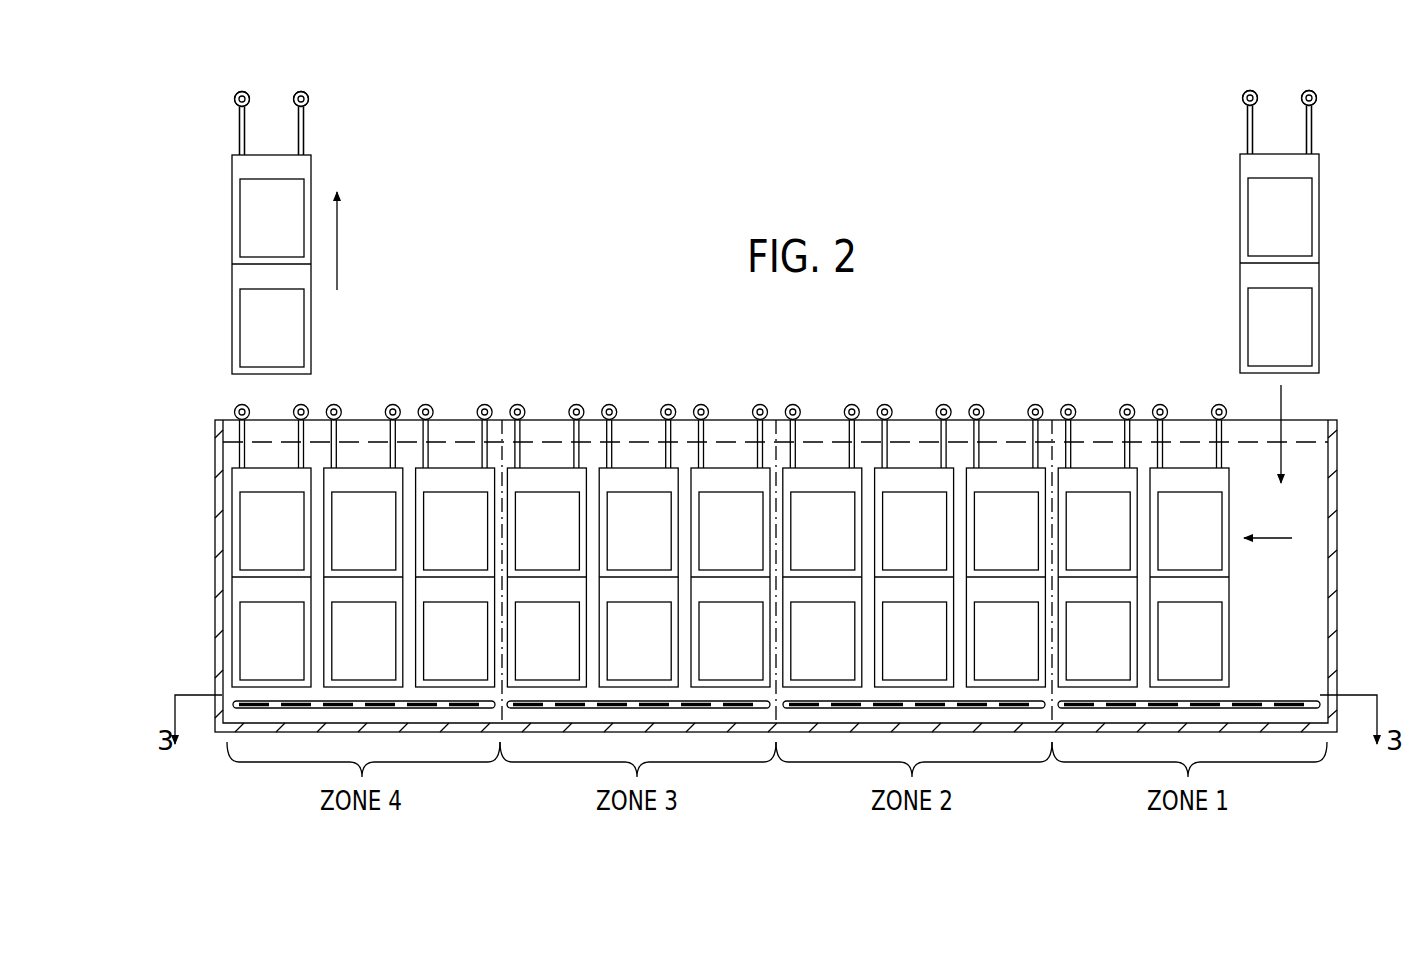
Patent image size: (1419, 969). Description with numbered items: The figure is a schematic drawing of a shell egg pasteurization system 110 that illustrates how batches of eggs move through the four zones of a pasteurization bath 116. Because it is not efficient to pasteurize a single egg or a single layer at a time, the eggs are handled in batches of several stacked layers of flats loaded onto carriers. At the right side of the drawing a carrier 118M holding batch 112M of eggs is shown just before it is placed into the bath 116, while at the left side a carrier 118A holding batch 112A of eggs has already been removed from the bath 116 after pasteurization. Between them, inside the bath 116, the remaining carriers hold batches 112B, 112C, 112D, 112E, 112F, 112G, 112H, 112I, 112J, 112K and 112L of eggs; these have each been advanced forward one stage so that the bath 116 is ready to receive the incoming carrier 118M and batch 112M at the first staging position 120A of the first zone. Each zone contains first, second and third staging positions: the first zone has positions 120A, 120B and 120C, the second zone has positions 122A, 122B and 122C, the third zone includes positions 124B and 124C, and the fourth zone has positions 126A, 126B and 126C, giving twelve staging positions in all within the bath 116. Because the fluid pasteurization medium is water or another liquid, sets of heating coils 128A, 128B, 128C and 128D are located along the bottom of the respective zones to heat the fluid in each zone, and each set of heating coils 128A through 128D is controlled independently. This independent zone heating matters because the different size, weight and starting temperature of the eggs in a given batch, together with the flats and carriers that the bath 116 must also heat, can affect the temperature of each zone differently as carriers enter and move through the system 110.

The shell egg pasteurization system 110 is at (1002, 289).
The batch of eggs 112A is at (232, 193).
The batch of eggs 112B is at (272, 483).
The batch of eggs 112C is at (364, 483).
The batch of eggs 112D is at (456, 483).
The batch of eggs 112E is at (548, 483).
The batch of eggs 112F is at (640, 483).
The batch of eggs 112G is at (732, 483).
The batch of eggs 112H is at (823, 483).
The batch of eggs 112I is at (915, 483).
The batch of eggs 112J is at (1007, 483).
The batch of eggs 112K is at (1099, 483).
The batch of eggs 112L is at (1190, 483).
The batch of eggs 112M is at (1316, 245).
The pasteurization bath 116 is at (228, 548).
The carrier 118A is at (312, 154).
The carrier 118M is at (1320, 153).
The first staging position 120A is at (1272, 690).
The second staging position 120B is at (1167, 692).
The third staging position 120C is at (1084, 692).
The first staging position 122A is at (733, 692).
The second staging position 122B is at (891, 692).
The third staging position 122C is at (809, 692).
The second staging position 124B is at (614, 692).
The third staging position 124C is at (539, 692).
The first staging position 126A is at (456, 692).
The second staging position 126B is at (339, 692).
The third staging position 126C is at (259, 692).
The set of heating coils 128A is at (1288, 702).
The set of heating coils 128B is at (975, 708).
The set of heating coils 128C is at (700, 708).
The set of heating coils 128D is at (428, 708).